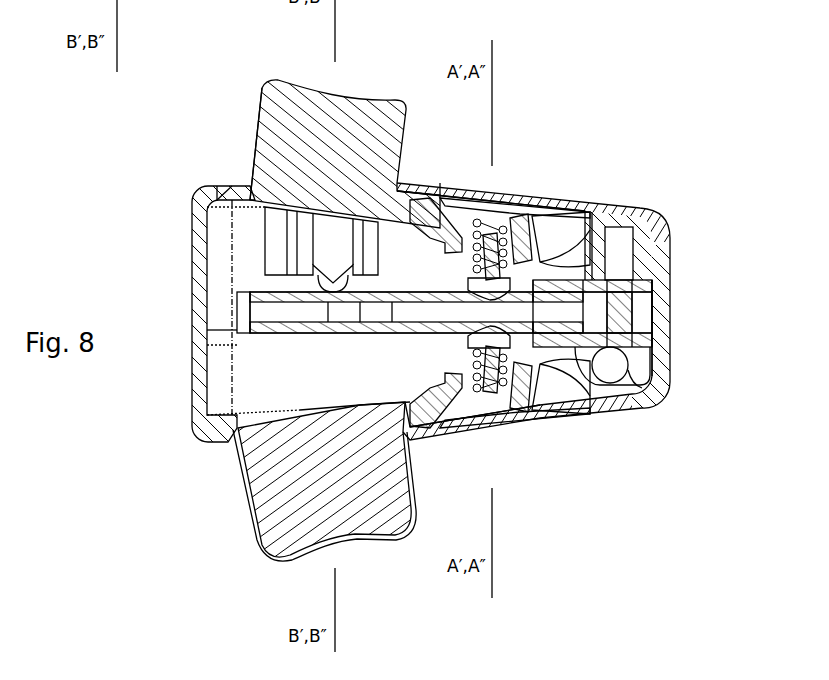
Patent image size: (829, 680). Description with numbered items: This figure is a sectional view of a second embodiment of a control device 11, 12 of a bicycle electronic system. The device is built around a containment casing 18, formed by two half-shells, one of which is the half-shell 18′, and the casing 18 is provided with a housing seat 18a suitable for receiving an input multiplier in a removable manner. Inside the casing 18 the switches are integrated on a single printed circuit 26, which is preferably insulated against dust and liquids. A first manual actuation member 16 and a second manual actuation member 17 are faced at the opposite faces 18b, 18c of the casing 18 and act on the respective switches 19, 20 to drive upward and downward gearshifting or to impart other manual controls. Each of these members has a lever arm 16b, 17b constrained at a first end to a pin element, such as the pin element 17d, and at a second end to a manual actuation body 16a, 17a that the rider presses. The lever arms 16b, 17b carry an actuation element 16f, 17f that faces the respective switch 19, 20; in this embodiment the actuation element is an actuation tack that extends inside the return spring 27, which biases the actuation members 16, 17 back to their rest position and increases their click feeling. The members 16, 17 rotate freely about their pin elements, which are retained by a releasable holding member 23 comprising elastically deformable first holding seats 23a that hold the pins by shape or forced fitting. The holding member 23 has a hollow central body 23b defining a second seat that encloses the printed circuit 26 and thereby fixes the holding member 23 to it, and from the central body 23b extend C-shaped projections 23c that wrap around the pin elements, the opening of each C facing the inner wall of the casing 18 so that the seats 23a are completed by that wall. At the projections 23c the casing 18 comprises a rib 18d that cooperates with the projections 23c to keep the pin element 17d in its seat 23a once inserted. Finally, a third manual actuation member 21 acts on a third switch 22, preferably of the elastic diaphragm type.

The control device 11 is at (572, 120).
The control device 12 is at (566, 121).
The first manual actuation member 16 is at (335, 116).
The manual actuation body 16a is at (262, 122).
The lever arm 16b is at (420, 200).
The actuation element 16f is at (490, 265).
The second manual actuation member 17 is at (300, 328).
The manual actuation body 17a is at (268, 560).
The lever arm 17b is at (435, 412).
The pin element 17d is at (640, 366).
The actuation element 17f is at (473, 350).
The containment casing 18 is at (475, 333).
The housing seat 18a is at (270, 369).
The face of the containment casing 18b is at (537, 186).
The face of the containment casing 18c is at (537, 437).
The rib 18d is at (648, 354).
The half-shell 18′ is at (670, 238).
The switch 19 is at (500, 305).
The switch 20 is at (615, 383).
The third manual actuation member 21 is at (322, 241).
The third switch 22 is at (313, 297).
The releasable holding member 23 is at (500, 391).
The first holding seat 23a is at (645, 352).
The hollow central body 23b is at (517, 330).
The C-shaped projection 23c is at (623, 383).
The printed circuit 26 is at (240, 325).
The return spring 27 is at (490, 243).